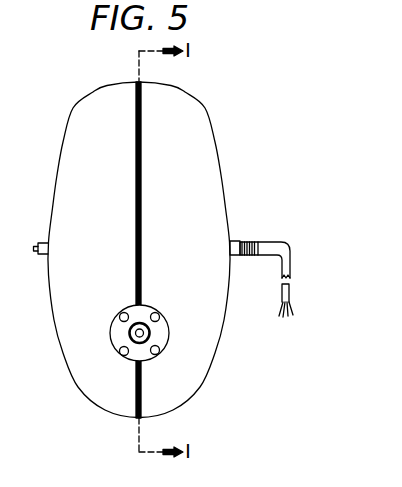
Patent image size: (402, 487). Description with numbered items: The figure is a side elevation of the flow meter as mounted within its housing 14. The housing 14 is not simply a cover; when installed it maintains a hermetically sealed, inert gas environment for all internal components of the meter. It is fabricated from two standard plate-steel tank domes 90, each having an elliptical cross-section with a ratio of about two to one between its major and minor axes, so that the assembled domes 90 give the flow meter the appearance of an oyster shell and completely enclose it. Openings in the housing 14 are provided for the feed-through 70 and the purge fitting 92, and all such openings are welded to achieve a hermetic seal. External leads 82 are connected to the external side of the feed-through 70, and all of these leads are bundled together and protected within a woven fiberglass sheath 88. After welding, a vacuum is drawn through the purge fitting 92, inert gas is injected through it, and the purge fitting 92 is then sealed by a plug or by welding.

The housing 14 is at (227, 365).
The tank domes 90 is at (95, 98).
The purge fitting 92 is at (41, 240).
The feed-through 70 is at (231, 240).
The external leads 82 is at (289, 242).
The woven fiberglass sheath 88 is at (280, 312).